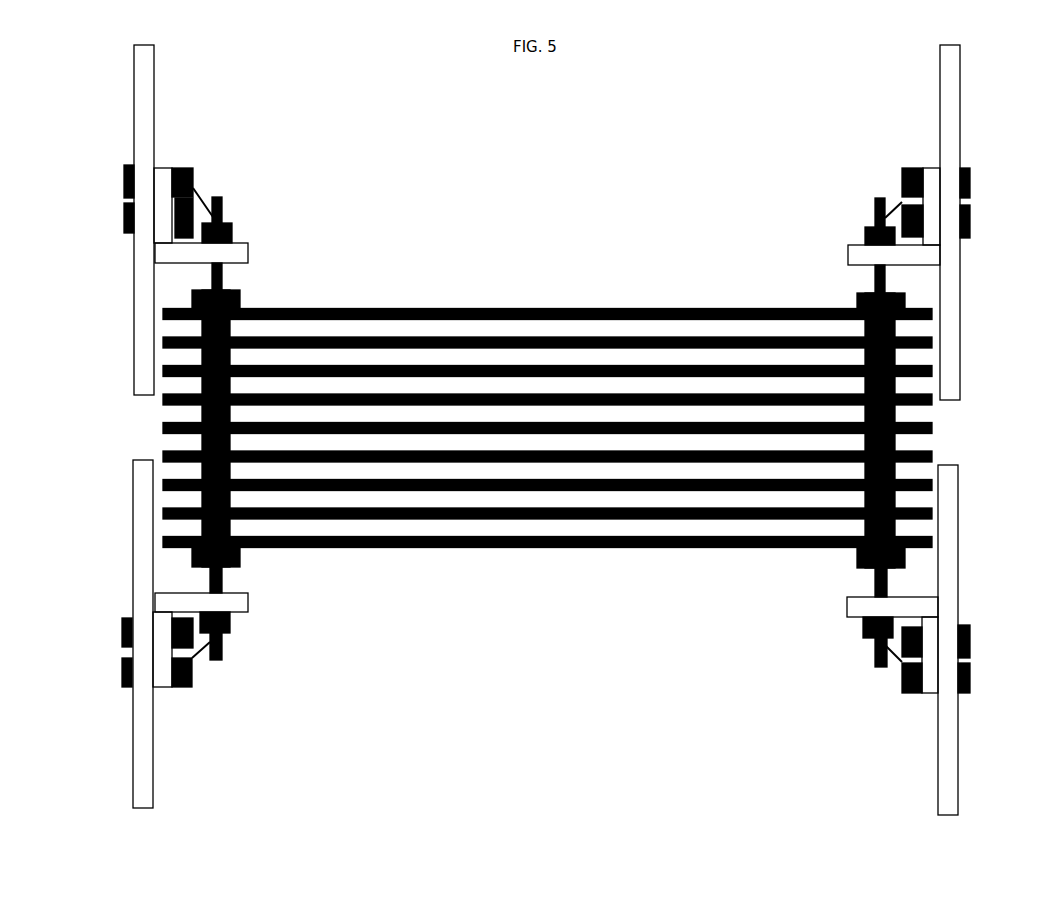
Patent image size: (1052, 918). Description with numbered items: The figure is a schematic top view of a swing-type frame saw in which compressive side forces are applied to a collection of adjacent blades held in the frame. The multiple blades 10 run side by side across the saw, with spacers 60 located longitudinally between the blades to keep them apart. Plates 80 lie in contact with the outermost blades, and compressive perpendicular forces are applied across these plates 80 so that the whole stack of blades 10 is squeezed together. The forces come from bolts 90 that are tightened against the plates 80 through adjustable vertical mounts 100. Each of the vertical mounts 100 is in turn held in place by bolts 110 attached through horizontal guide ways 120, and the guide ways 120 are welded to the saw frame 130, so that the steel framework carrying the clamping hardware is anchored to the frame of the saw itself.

The blades 10 is at (510, 370).
The spacers 60 is at (237, 435).
The plates 80 is at (240, 297).
The bolts 90 is at (232, 237).
The adjustable vertical mounts 100 is at (227, 253).
The bolts 110 is at (193, 188).
The horizontal guide ways 120 is at (172, 170).
The saw frame 130 is at (145, 102).